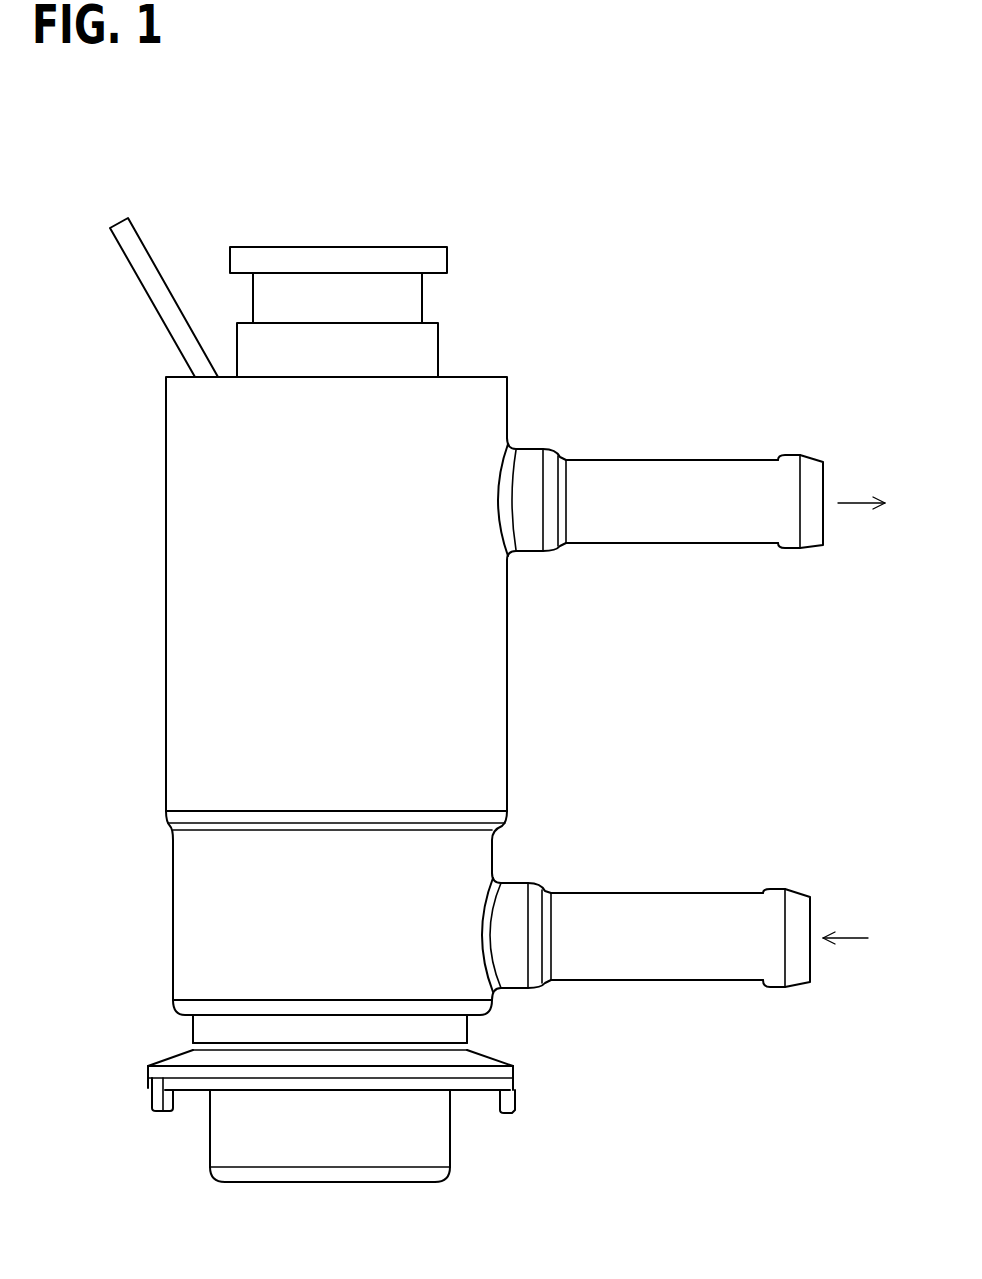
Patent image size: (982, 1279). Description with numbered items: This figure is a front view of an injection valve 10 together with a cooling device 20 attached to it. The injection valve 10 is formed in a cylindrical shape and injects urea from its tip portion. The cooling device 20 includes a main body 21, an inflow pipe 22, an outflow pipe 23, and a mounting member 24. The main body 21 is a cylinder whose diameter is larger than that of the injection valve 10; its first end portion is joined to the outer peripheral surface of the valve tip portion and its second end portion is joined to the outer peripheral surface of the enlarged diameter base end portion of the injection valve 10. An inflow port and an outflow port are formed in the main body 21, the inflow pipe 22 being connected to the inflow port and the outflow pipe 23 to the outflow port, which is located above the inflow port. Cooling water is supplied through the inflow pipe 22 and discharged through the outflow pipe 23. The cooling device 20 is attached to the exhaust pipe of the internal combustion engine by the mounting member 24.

The injection valve 10 is at (438, 350).
The cooling device 20 is at (608, 417).
The main body 21 is at (508, 398).
The inflow pipe 22 is at (707, 893).
The outflow pipe 23 is at (712, 460).
The mounting member 24 is at (492, 1062).